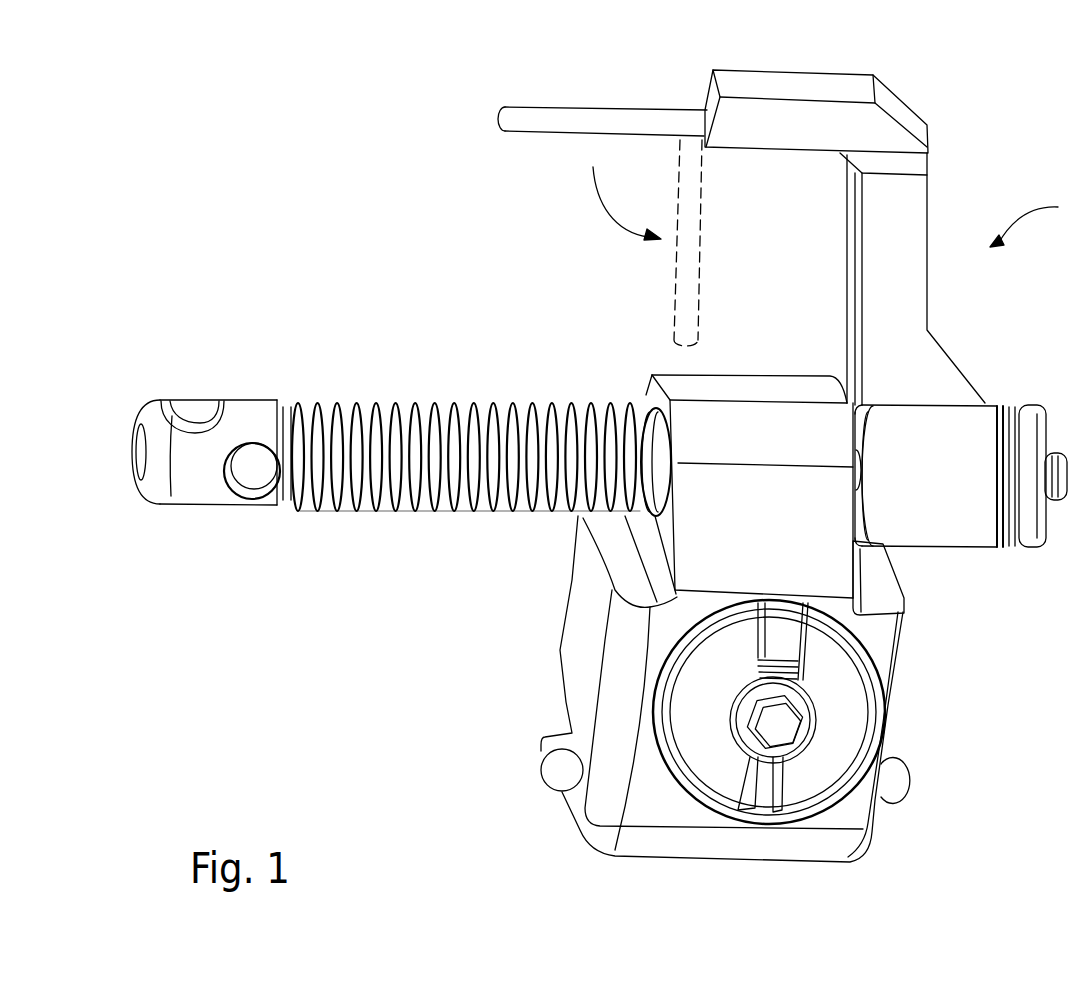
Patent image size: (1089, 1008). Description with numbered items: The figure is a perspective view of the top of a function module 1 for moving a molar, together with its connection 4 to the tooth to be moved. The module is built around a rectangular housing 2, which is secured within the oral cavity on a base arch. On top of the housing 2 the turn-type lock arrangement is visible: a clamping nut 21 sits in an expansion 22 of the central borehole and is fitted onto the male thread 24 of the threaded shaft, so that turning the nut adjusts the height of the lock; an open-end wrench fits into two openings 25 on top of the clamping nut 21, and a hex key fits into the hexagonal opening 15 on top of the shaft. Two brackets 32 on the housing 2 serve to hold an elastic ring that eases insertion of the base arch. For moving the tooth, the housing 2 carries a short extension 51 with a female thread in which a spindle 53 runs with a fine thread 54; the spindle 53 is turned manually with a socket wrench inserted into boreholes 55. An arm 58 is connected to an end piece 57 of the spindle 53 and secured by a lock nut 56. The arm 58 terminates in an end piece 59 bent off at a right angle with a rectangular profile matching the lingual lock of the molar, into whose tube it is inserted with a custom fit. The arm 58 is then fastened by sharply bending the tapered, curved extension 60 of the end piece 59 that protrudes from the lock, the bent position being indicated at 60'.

The function module 1 is at (603, 463).
The housing 2 is at (872, 630).
The connection 4 is at (1032, 217).
The hexagonal opening 15 is at (771, 813).
The clamping nut 21 is at (888, 703).
The expansion 22 is at (747, 813).
The male thread 24 is at (760, 676).
The openings 25 is at (843, 697).
The brackets 32 is at (557, 773).
The extension 51 is at (772, 390).
The spindle 53 is at (372, 516).
The fine thread 54 is at (450, 403).
The boreholes 55 is at (252, 473).
The lock nut 56 is at (1020, 433).
The end piece 57 is at (940, 440).
The arm 58 is at (848, 263).
The end piece 59 is at (810, 83).
The extension 60 is at (602, 164).
The bent extension 60' is at (638, 243).